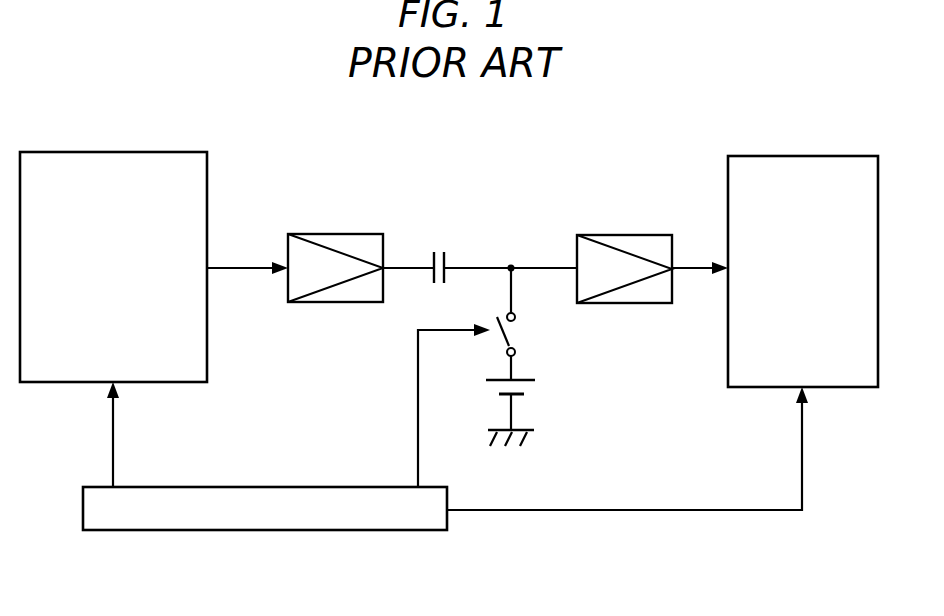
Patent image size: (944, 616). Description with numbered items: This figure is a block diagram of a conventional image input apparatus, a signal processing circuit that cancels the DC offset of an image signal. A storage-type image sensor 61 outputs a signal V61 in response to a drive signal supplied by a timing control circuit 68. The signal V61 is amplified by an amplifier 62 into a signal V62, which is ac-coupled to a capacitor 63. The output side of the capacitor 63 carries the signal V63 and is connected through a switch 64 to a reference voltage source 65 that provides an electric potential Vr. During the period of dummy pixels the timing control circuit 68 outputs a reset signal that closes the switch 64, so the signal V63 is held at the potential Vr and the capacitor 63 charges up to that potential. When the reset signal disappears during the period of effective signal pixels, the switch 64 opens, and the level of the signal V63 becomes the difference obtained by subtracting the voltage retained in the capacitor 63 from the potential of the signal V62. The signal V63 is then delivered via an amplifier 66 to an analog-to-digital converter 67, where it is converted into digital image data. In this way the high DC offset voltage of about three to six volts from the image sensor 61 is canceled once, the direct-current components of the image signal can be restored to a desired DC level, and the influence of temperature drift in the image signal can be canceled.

The storage-type image sensor 61 is at (113, 152).
The amplifier 62 is at (333, 234).
The capacitor 63 is at (439, 251).
The switch 64 is at (518, 322).
The reference voltage source 65 is at (540, 393).
The amplifier 66 is at (620, 235).
The analog-to-digital converter 67 is at (804, 156).
The timing control circuit 68 is at (260, 487).
The signal V61 is at (243, 272).
The signal V62 is at (415, 272).
The signal V63 is at (511, 261).
The electric potential Vr is at (517, 353).